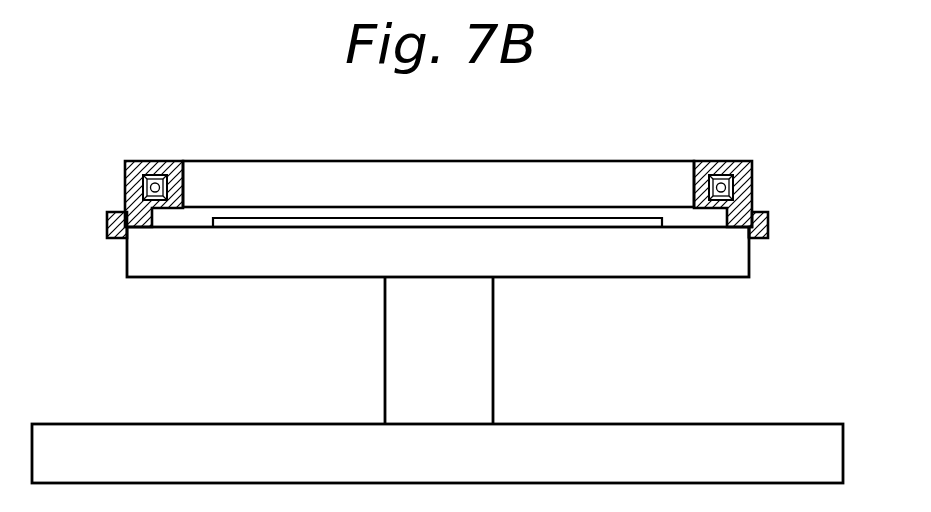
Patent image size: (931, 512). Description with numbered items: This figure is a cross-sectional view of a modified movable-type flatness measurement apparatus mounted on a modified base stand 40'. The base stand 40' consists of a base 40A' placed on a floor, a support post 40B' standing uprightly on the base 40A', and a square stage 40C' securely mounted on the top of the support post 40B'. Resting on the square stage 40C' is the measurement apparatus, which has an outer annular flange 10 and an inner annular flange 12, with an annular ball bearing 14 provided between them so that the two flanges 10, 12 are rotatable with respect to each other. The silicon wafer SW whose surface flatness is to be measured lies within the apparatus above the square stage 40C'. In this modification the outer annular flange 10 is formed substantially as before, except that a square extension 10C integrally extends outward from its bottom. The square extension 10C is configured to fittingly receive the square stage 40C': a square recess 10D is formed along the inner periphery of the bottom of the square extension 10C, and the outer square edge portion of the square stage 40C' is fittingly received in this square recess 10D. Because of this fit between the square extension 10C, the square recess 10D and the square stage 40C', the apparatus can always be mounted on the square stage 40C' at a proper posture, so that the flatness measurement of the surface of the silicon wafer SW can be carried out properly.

The outer annular flange 10 is at (721, 160).
The square extension 10C is at (757, 212).
The square recess 10D is at (748, 236).
The inner annular flange 12 is at (183, 185).
The annular ball bearing 14 is at (143, 188).
The silicon wafer SW is at (592, 223).
The base stand 40' is at (502, 350).
The base 40A' is at (437, 426).
The support post 40B' is at (365, 350).
The square stage 40C' is at (430, 286).